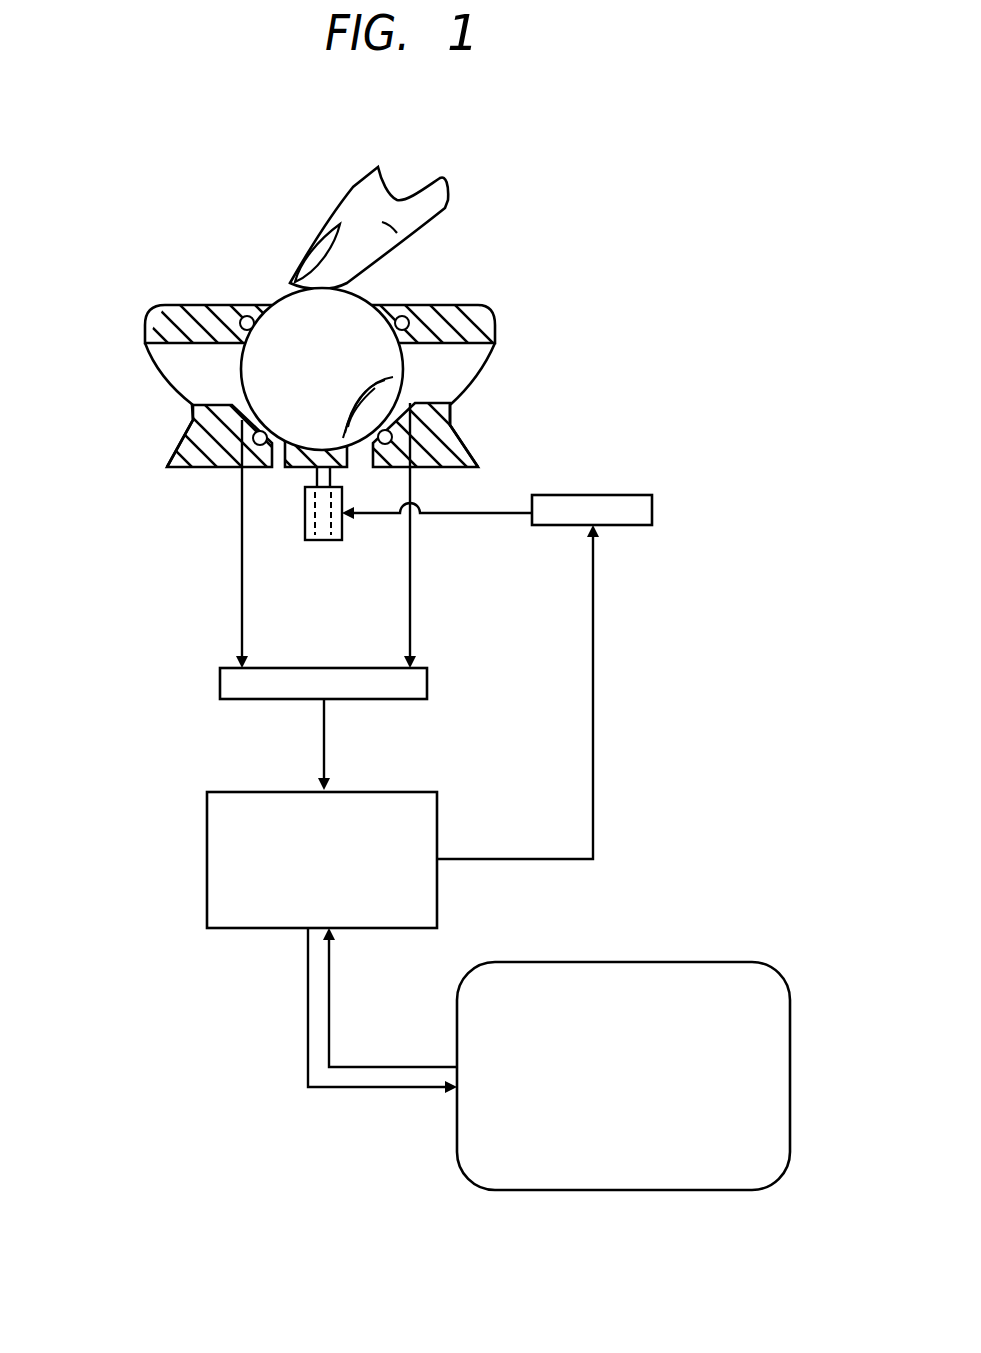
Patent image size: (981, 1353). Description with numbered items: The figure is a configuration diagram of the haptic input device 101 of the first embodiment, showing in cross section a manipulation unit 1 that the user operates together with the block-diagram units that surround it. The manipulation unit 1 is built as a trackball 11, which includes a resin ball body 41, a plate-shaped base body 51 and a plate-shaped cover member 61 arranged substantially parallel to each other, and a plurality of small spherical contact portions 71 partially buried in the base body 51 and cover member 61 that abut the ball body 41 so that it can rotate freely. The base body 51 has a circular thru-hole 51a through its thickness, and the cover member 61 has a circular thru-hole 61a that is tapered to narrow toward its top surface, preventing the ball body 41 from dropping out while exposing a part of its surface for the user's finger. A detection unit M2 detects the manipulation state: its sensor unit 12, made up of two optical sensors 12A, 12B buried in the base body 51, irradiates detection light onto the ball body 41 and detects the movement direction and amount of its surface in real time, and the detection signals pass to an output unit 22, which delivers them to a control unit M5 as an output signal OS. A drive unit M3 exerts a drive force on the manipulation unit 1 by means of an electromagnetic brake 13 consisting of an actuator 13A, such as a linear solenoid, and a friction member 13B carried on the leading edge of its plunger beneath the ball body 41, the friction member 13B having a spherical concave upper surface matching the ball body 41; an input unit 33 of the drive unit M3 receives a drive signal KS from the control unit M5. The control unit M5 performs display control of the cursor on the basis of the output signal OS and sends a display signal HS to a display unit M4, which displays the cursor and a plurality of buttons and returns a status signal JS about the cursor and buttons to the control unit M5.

The haptic input device 101 is at (437, 128).
The manipulation unit 1 is at (186, 262).
The trackball 11 is at (593, 250).
The ball body 41 is at (362, 318).
The contact portion 71 is at (245, 316).
The cover member 61 is at (457, 335).
The thru-hole 61a is at (273, 291).
The base body 51 is at (457, 403).
The thru-hole 51a is at (369, 475).
The sensor unit 12 is at (107, 362).
The optical sensor 12A is at (232, 428).
The optical sensor 12B is at (403, 408).
The electromagnetic brake 13 is at (683, 540).
The actuator 13A is at (330, 522).
The friction member 13B is at (350, 463).
The input unit 33 is at (643, 512).
The output unit 22 is at (230, 683).
The detection unit M2 is at (62, 382).
The drive unit M3 is at (724, 493).
The display unit M4 is at (627, 962).
The control unit M5 is at (207, 860).
The output signal OS is at (326, 740).
The drive signal KS is at (593, 705).
The status signal JS is at (397, 1065).
The display signal HS is at (393, 1088).